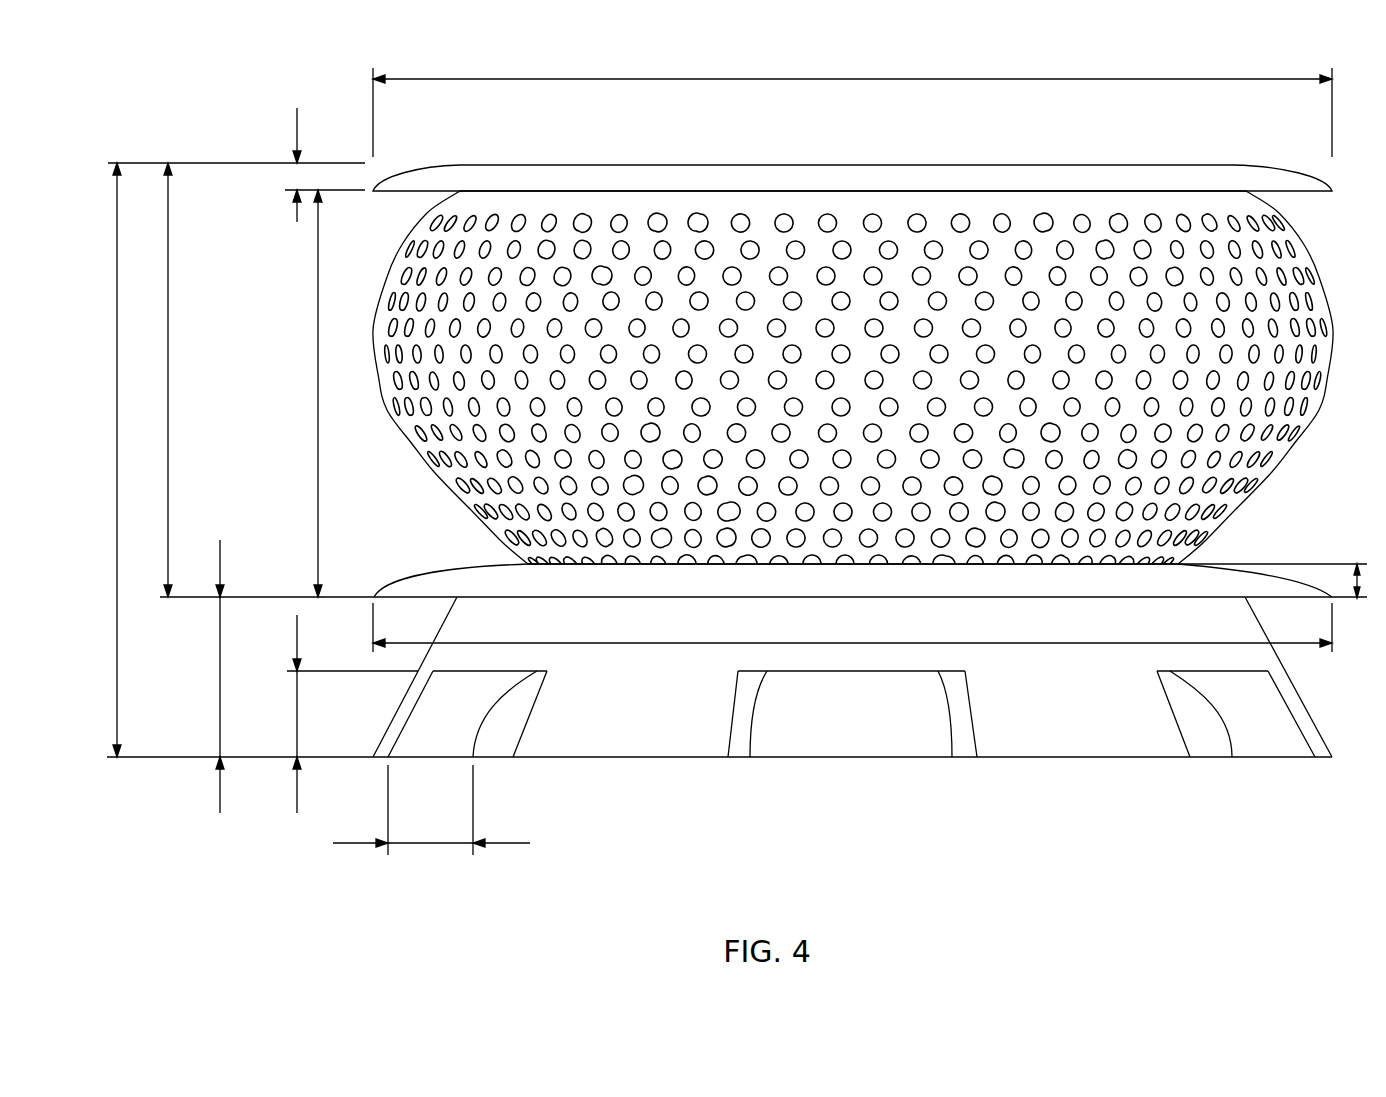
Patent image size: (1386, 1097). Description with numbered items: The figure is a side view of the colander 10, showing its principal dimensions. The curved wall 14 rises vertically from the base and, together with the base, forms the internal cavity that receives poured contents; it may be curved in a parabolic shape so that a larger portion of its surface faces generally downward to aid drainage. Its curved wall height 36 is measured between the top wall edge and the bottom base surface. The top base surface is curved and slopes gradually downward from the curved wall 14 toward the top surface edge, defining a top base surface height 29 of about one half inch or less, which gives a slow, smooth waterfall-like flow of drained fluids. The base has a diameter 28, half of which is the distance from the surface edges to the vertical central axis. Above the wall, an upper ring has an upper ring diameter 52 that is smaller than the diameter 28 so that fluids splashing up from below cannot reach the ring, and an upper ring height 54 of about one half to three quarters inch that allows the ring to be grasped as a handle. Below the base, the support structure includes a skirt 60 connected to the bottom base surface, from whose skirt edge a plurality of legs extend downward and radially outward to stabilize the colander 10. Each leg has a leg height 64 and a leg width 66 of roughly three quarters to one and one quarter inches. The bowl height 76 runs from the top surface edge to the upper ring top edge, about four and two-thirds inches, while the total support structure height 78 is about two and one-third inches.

The colander 10 is at (225, 96).
The curved wall 14 is at (1298, 481).
The diameter of the base 28 is at (852, 627).
The top base surface height 29 is at (1353, 582).
The curved wall height 36 is at (299, 393).
The upper ring diameter 52 is at (852, 99).
The upper ring height 54 is at (297, 174).
The skirt 60 is at (783, 703).
The leg height 64 is at (311, 714).
The leg width 66 is at (431, 819).
The bowl height 76 is at (184, 380).
The total support structure height 78 is at (205, 676).